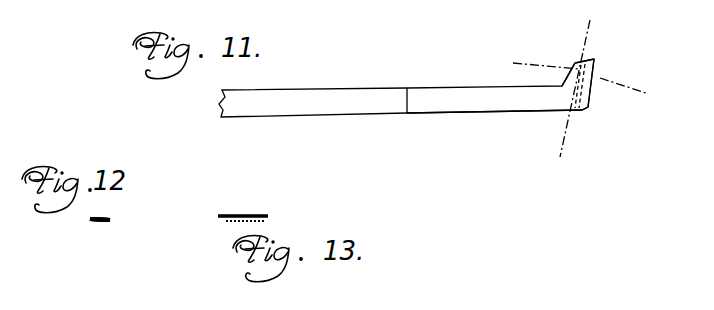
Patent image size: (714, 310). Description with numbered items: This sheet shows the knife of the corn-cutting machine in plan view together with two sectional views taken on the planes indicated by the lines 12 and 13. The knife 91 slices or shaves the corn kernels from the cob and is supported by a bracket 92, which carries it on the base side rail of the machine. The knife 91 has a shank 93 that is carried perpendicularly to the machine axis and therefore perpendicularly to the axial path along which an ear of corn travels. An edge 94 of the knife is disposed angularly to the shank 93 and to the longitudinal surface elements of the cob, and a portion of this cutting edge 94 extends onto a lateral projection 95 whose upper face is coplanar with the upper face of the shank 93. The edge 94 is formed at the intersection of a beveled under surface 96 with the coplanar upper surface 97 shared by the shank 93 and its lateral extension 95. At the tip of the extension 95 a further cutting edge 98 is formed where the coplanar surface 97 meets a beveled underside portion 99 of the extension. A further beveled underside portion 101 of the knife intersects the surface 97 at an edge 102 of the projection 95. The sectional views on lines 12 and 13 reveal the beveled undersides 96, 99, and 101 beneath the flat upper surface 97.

In FIG. 11, the knife 91 is at (430, 84).
In FIG. 11, the bracket 92 is at (331, 100).
In FIG. 11, the shank 93 is at (493, 103).
In FIG. 11, the edge 94 is at (591, 108).
In FIG. 12, the edge 94 is at (110, 220).
In FIG. 11, the lateral projection 95 is at (600, 66).
In FIG. 11, the beveled under surface 96 is at (592, 86).
In FIG. 12, the beveled under surface 96 is at (108, 222).
In FIG. 12, the coplanar upper surface 97 is at (107, 218).
In FIG. 13, the coplanar upper surface 97 is at (260, 215).
In FIG. 11, the cutting edge 98 is at (595, 61).
In FIG. 11, the beveled underside portion 99 is at (582, 62).
In FIG. 13, the beveled underside portion 99 is at (221, 219).
In FIG. 11, the beveled underside portion 101 is at (576, 64).
In FIG. 12, the beveled underside portion 101 is at (92, 222).
In FIG. 11, the edge 102 is at (576, 71).
In FIG. 12, the edge 102 is at (90, 219).
In FIG. 11, the section line 12— 12 is at (518, 39).
In FIG. 11, the section line 13— 13 is at (610, 22).